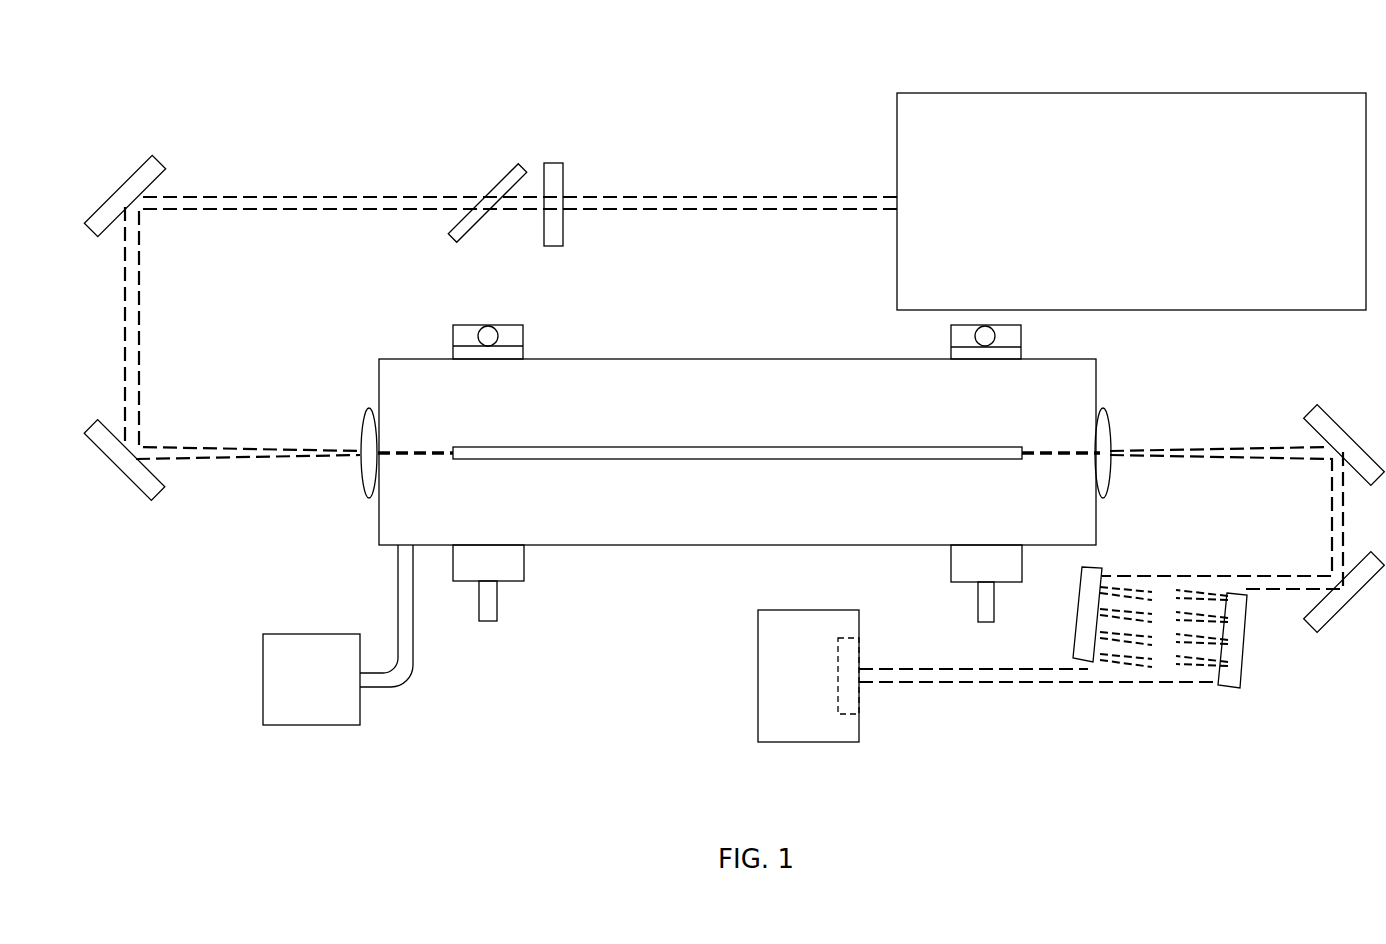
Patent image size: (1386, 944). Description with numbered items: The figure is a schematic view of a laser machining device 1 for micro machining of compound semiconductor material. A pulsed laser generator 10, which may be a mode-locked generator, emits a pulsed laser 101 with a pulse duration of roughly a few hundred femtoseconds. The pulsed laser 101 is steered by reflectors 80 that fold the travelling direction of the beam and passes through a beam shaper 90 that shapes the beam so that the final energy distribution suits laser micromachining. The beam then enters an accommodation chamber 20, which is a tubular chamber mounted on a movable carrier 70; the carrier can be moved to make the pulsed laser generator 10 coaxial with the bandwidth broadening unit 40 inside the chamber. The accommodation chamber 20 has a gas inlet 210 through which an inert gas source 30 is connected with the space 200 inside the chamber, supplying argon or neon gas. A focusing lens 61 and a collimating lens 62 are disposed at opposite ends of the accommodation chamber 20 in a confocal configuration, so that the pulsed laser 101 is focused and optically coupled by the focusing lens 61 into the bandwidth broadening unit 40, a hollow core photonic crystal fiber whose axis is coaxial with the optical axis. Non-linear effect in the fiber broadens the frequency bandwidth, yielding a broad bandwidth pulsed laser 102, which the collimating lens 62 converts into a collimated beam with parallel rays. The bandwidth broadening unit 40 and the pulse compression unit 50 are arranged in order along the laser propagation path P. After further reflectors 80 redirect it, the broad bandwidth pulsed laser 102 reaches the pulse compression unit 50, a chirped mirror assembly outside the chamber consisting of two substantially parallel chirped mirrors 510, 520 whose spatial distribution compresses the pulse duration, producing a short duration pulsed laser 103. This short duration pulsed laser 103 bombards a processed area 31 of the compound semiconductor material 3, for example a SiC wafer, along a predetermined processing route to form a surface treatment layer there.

The laser machining device 1 is at (106, 57).
The pulsed laser generator 10 is at (1130, 93).
The pulsed laser 101 is at (718, 192).
The reflector 80 is at (117, 186).
The beam shaper 90 is at (518, 162).
The accommodation chamber 20 is at (405, 358).
The movable carrier 70 is at (490, 325).
The bandwidth broadening unit 40 is at (737, 447).
The laser propagation path P is at (422, 447).
The focusing lens 61 is at (360, 472).
The collimating lens 62 is at (1112, 432).
The broad bandwidth pulsed laser 102 is at (1219, 445).
The chirped mirror 510 is at (1085, 662).
The chirped mirror 520 is at (1230, 688).
The pulse compression unit 50 is at (1082, 760).
The short duration pulsed laser 103 is at (963, 688).
The compound semiconductor material 3 is at (758, 675).
The processed area 31 is at (845, 714).
The inert gas source 30 is at (311, 634).
The gas inlet 210 is at (410, 556).
The space 200 is at (595, 520).